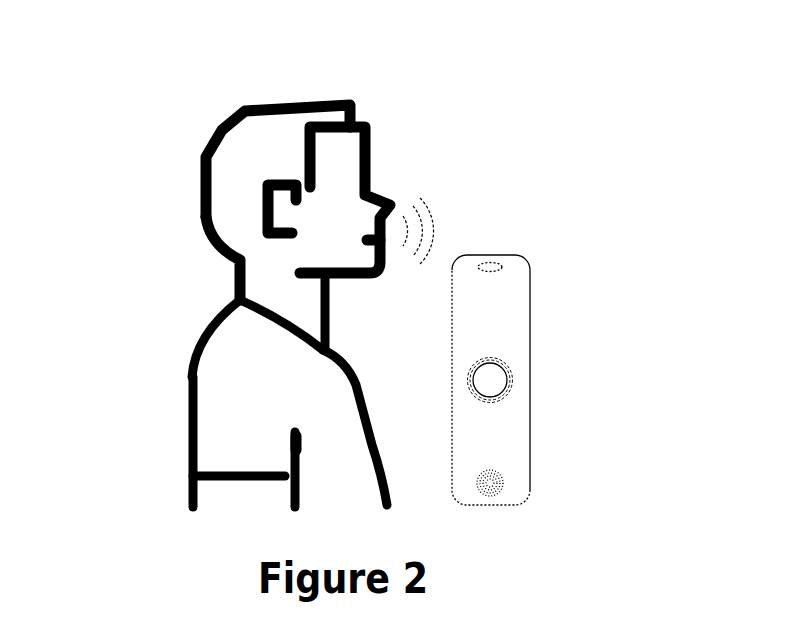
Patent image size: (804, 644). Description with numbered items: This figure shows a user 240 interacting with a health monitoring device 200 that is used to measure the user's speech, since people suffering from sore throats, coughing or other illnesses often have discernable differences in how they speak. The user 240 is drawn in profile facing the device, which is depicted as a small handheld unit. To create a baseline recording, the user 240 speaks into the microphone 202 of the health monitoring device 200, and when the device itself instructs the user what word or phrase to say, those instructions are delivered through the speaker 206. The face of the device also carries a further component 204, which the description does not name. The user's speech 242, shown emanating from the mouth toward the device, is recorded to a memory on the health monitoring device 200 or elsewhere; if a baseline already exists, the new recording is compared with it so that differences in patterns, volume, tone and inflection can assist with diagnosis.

The health monitoring device 200 is at (530, 447).
The microphone 202 is at (500, 260).
The button / microphone ring 204 is at (498, 358).
The speaker 206 is at (505, 490).
The user 240 is at (207, 330).
The speech 242 is at (427, 205).